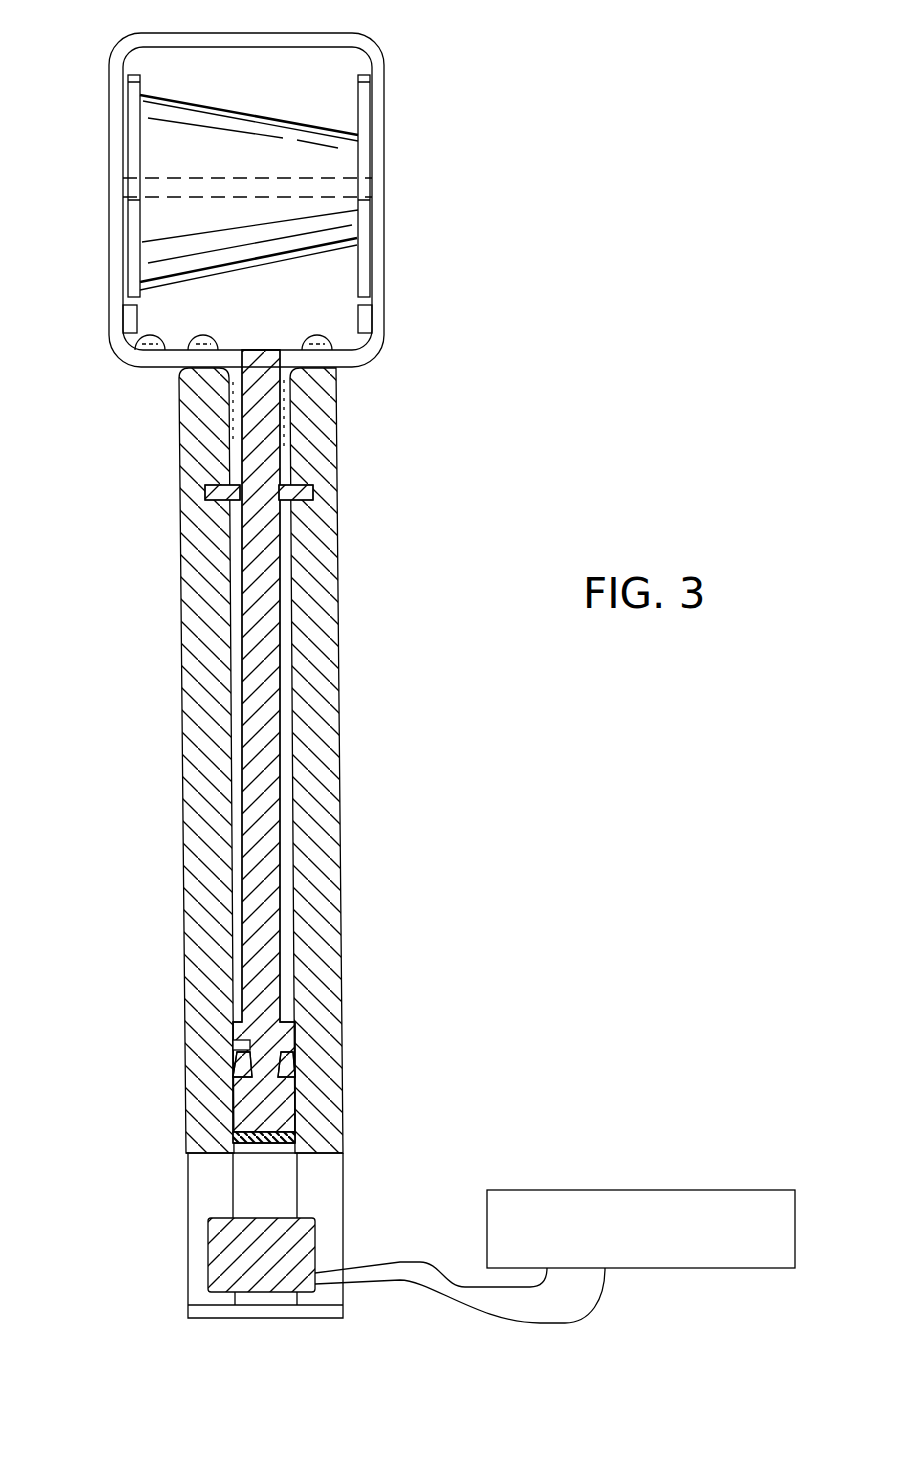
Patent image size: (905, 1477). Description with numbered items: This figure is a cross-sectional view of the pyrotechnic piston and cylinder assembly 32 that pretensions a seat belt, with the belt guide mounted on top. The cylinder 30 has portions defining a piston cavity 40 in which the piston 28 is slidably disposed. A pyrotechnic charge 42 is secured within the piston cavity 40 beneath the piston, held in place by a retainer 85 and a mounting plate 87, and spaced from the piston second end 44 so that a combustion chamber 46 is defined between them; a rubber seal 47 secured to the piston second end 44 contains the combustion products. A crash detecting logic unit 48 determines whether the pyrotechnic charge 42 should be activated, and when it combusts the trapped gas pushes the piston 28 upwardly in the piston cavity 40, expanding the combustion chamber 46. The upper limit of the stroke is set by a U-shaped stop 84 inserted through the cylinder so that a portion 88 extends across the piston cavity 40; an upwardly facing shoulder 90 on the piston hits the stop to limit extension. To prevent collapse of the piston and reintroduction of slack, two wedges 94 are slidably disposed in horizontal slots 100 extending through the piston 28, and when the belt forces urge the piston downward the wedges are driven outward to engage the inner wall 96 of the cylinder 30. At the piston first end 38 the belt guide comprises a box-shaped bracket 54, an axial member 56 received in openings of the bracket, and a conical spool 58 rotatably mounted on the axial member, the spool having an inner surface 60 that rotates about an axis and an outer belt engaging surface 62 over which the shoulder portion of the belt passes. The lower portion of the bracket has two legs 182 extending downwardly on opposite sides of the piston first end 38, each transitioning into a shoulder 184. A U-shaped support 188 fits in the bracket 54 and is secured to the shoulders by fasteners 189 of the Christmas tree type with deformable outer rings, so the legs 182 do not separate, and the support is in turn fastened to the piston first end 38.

The piston 28 is at (284, 617).
The cylinder 30 is at (336, 702).
The piston and cylinder assembly 32 is at (416, 249).
The piston first end 38 is at (281, 375).
The piston cavity 40 is at (292, 551).
The pyrotechnic charge 42 is at (320, 1237).
The piston second end 44 is at (296, 1140).
The combustion chamber 46 is at (237, 1201).
The rubber seal 47 is at (287, 1146).
The crash detecting logic unit 48 is at (736, 1189).
The box-shaped bracket 54 is at (385, 98).
The axial member 56 is at (209, 177).
The conical spool 58 is at (296, 120).
The inner surface 60 is at (222, 197).
The outer belt engaging surface 62 is at (239, 114).
The U-shaped stop 84 is at (293, 477).
The retainer 85 is at (187, 1223).
The mounting plate 87 is at (188, 1310).
The portion of the stop 88 is at (291, 512).
The upwardly facing shoulder 90 is at (283, 1022).
The wedges 94 is at (234, 1068).
The inner wall 96 is at (290, 404).
The horizontal slots 100 is at (235, 1045).
The legs 182 is at (290, 445).
The shoulder 184 is at (353, 366).
The U-shaped support 188 is at (135, 335).
The fasteners 189 is at (213, 335).